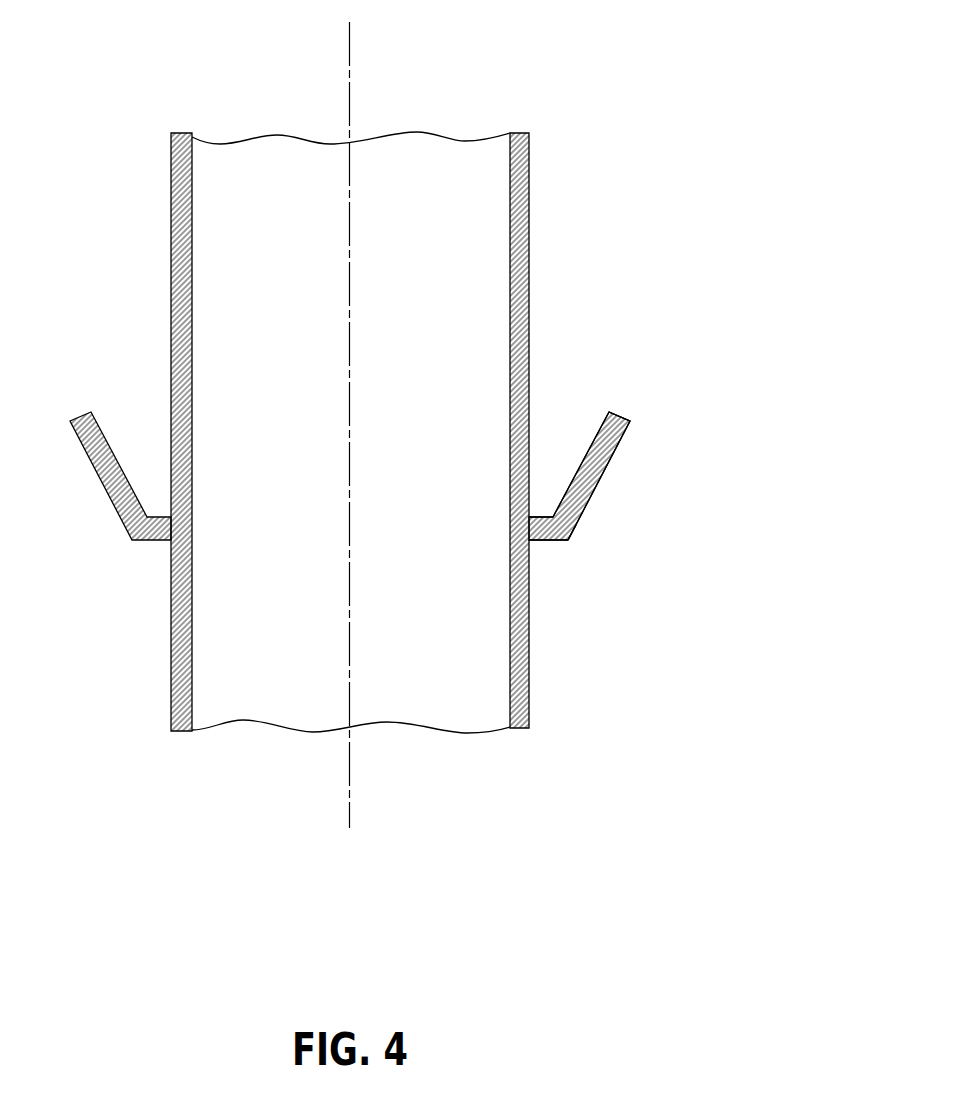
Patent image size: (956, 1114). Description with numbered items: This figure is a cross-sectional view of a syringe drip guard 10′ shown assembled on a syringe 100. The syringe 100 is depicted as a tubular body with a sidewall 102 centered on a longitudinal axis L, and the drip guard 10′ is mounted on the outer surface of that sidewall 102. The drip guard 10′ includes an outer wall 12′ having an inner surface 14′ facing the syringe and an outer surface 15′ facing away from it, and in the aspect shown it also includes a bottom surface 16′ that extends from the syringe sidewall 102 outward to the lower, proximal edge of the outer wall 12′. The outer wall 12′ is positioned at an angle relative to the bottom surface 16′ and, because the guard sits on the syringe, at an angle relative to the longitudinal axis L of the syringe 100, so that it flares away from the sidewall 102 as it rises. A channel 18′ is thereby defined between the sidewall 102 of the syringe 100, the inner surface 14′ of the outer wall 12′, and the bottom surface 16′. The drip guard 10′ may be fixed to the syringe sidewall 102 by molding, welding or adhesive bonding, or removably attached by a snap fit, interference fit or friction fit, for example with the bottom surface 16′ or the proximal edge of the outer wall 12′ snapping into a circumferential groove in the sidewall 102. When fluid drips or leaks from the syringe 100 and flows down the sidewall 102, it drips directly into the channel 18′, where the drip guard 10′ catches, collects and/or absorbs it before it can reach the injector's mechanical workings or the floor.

The longitudinal axis L is at (350, 75).
The syringe 100 is at (465, 432).
The syringe sidewall 102 is at (530, 312).
The drip guard 10′ is at (657, 478).
The outer wall 12′ is at (605, 470).
The inner surface 14′ is at (607, 412).
The outer surface 15′ is at (580, 521).
The bottom surface 16′ is at (555, 543).
The channel 18′ is at (562, 440).